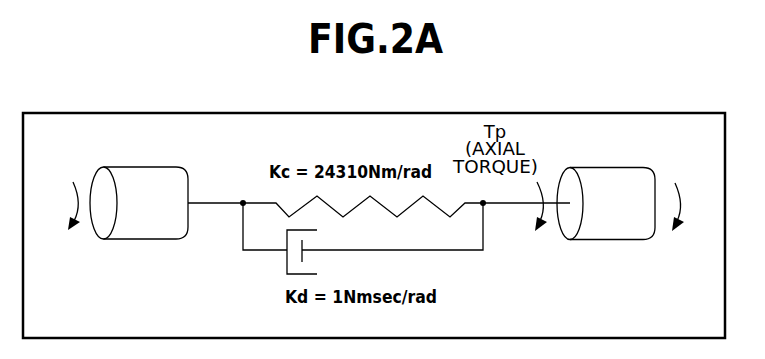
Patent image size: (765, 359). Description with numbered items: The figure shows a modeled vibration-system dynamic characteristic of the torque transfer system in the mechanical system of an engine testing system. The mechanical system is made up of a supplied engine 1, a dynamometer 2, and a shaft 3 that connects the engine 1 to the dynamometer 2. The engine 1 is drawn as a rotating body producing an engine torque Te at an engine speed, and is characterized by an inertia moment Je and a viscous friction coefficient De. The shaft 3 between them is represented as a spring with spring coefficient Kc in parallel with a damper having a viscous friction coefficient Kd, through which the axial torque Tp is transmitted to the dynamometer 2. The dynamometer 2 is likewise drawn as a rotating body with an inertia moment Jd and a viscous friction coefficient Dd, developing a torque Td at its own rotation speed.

The engine 1 is at (177, 167).
The dynamometer 2 is at (653, 182).
The shaft 3 is at (219, 203).